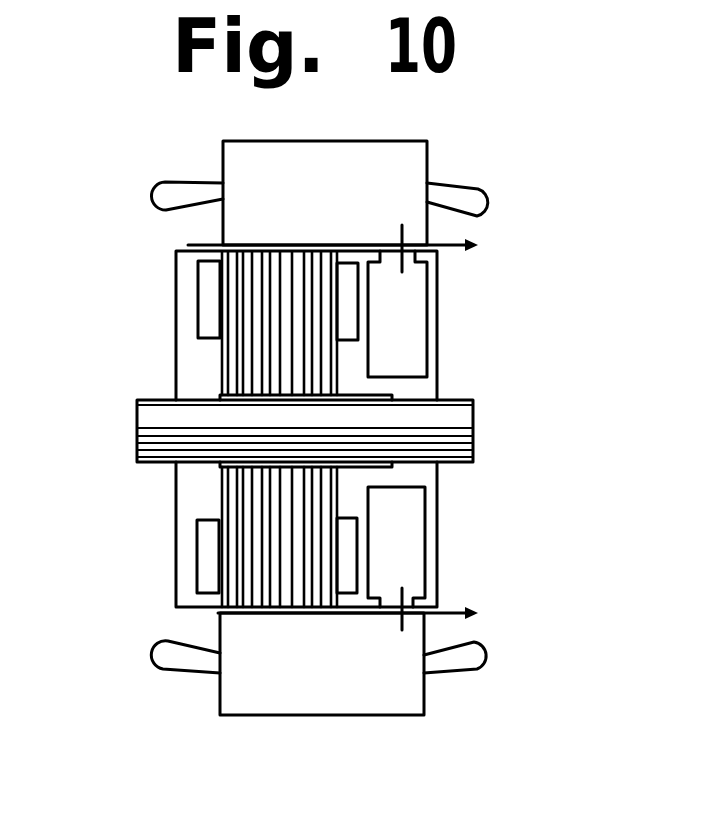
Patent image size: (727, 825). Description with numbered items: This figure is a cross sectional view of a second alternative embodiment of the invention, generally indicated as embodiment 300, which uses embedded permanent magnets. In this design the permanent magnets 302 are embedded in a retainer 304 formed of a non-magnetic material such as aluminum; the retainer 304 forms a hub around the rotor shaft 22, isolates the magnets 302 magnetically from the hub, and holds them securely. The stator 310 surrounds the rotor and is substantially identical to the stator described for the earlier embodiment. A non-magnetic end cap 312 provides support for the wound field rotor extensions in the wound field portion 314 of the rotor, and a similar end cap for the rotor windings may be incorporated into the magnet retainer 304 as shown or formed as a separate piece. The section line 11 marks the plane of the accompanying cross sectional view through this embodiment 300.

The second alternative embodiment 300 is at (158, 154).
The stator 310 is at (387, 155).
The section line 11 is at (333, 433).
The non-magnetic end cap 312 is at (188, 315).
The wound field portion 314 is at (290, 308).
The permanent magnets 302 is at (472, 429).
The retainer 304 is at (410, 358).
The rotor shaft 22 is at (457, 420).